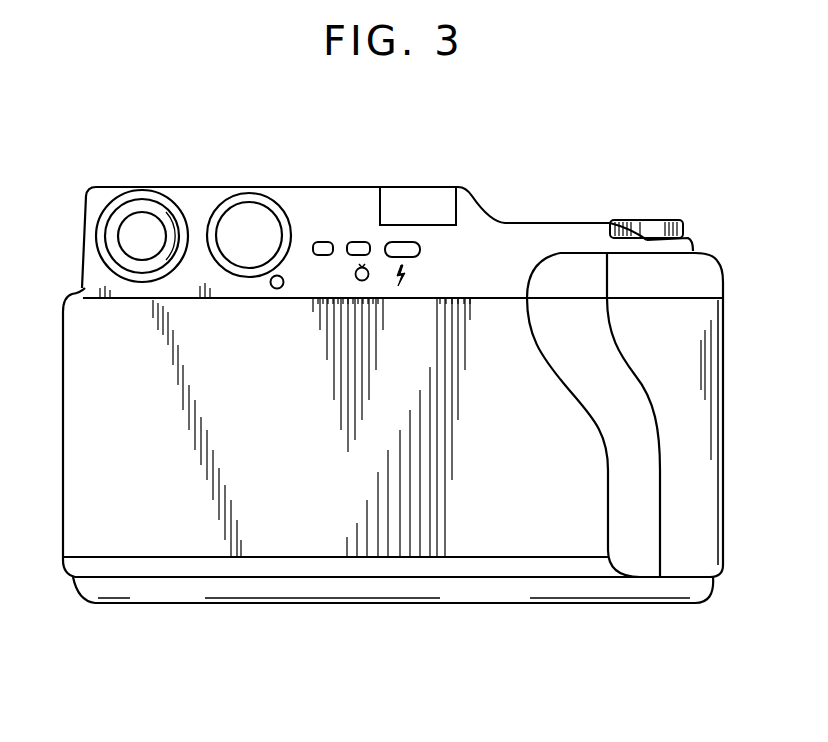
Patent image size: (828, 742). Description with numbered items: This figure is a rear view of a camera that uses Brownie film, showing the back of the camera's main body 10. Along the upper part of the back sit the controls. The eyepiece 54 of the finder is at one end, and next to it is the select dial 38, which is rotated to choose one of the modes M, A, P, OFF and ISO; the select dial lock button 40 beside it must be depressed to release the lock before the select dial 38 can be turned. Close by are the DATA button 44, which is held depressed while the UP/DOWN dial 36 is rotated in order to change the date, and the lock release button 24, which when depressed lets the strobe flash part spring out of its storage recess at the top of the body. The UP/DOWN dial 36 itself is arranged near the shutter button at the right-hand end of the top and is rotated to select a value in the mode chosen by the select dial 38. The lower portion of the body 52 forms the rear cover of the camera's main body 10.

The camera's main body 10 is at (572, 113).
The lock release button 24 is at (410, 258).
The UP/DOWN dial 36 is at (658, 222).
The select dial 38 is at (258, 212).
The select dial lock button 40 is at (277, 290).
The DATA button 44 is at (322, 242).
The front cover 52 is at (313, 548).
The eyepiece 54 is at (145, 230).